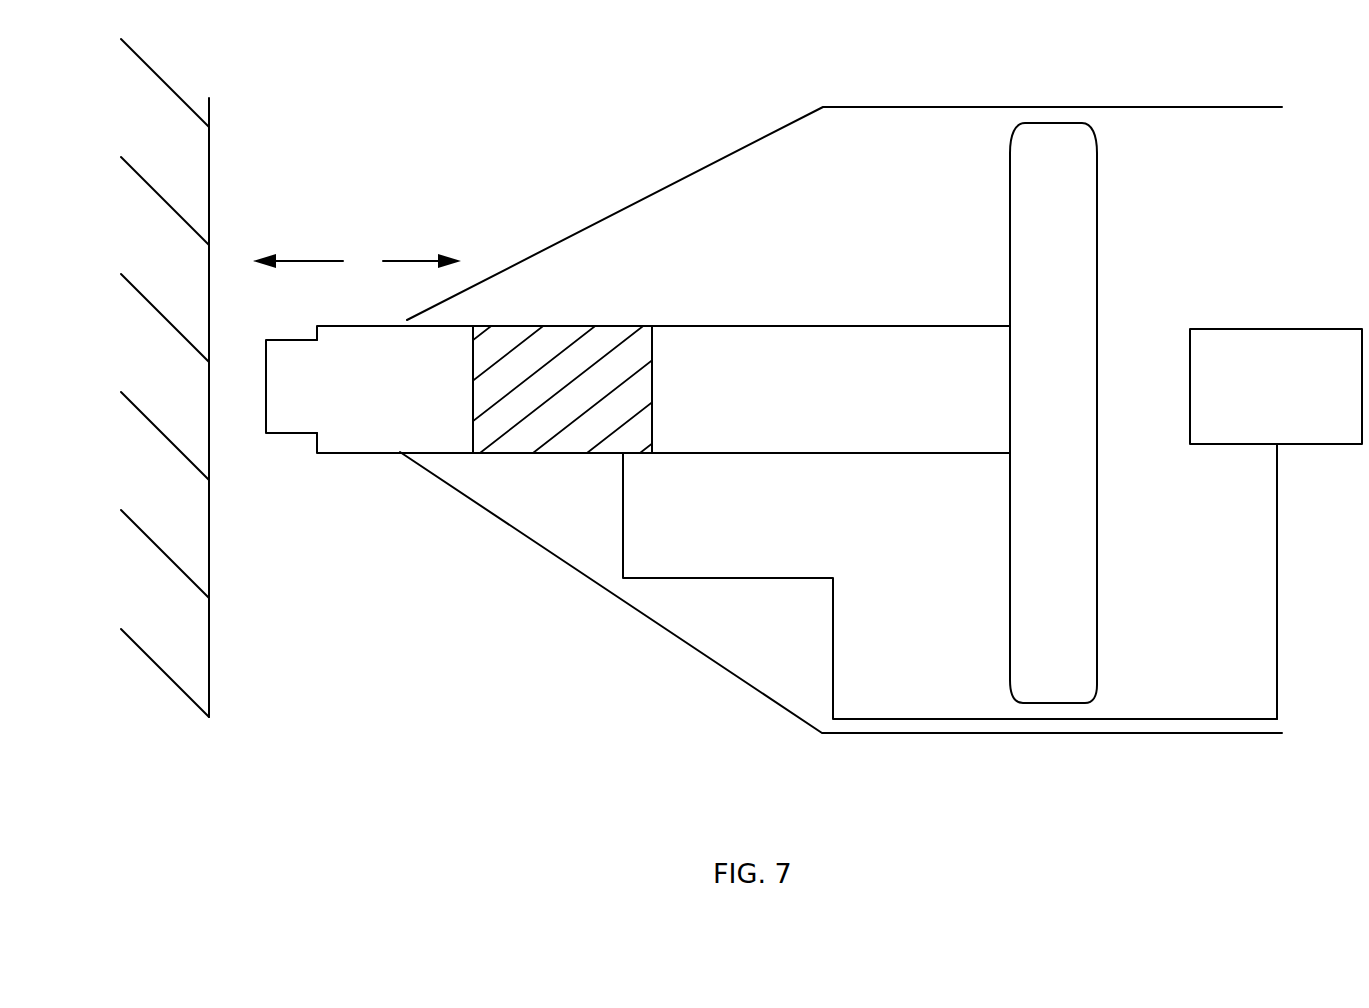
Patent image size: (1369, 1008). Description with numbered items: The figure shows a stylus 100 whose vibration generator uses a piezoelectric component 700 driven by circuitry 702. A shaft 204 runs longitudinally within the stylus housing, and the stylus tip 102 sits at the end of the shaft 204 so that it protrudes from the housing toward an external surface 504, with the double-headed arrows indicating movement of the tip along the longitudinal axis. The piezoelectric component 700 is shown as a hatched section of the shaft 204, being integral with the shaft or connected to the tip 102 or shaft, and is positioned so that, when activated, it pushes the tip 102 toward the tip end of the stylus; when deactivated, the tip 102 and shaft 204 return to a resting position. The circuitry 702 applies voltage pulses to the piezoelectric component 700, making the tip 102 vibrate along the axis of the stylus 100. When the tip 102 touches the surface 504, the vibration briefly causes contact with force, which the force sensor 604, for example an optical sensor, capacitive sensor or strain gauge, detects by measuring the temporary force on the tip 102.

The stylus 100 is at (675, 138).
The stylus tip 102 is at (300, 433).
The shaft 204 is at (663, 389).
The surface 504 is at (123, 378).
The force sensor 604 is at (1097, 243).
The piezoelectric component 700 is at (550, 453).
The circuitry 702 is at (1223, 444).